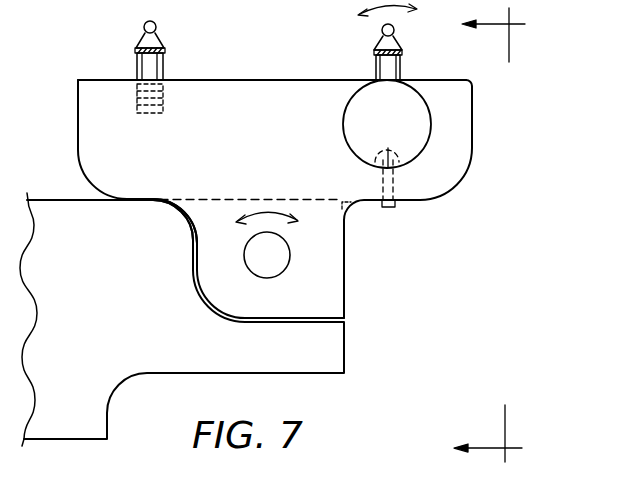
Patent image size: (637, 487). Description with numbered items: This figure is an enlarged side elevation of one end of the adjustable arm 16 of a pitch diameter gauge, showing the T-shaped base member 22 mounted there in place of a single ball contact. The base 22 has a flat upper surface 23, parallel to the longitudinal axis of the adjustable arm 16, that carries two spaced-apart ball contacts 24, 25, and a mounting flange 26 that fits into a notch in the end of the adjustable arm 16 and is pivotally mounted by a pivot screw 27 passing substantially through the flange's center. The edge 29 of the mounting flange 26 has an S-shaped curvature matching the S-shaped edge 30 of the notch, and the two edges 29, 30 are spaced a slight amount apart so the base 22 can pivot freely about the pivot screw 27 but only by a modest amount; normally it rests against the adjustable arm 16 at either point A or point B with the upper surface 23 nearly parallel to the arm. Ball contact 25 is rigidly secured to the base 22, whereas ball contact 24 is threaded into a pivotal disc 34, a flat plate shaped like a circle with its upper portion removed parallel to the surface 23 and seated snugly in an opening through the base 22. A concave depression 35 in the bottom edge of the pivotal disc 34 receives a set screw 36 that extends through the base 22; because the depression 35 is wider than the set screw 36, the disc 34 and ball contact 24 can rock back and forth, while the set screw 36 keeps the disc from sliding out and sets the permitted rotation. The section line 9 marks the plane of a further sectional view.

The adjustable arm 16 is at (208, 373).
The base member 22 is at (78, 107).
The flat upper surface 23 is at (245, 80).
The ball contact 24 is at (381, 31).
The ball contact 25 is at (144, 27).
The mounting flange 26 is at (346, 251).
The pivot screw 27 is at (288, 234).
The edge of mounting flange 29 is at (192, 232).
The edge of mounting notch 30 is at (193, 265).
The pivotal disc 34 is at (429, 98).
The concave depression 35 is at (388, 150).
The set screw 36 is at (389, 208).
The section line 9- 9 is at (497, 235).
The point A is at (139, 205).
The point B is at (352, 319).